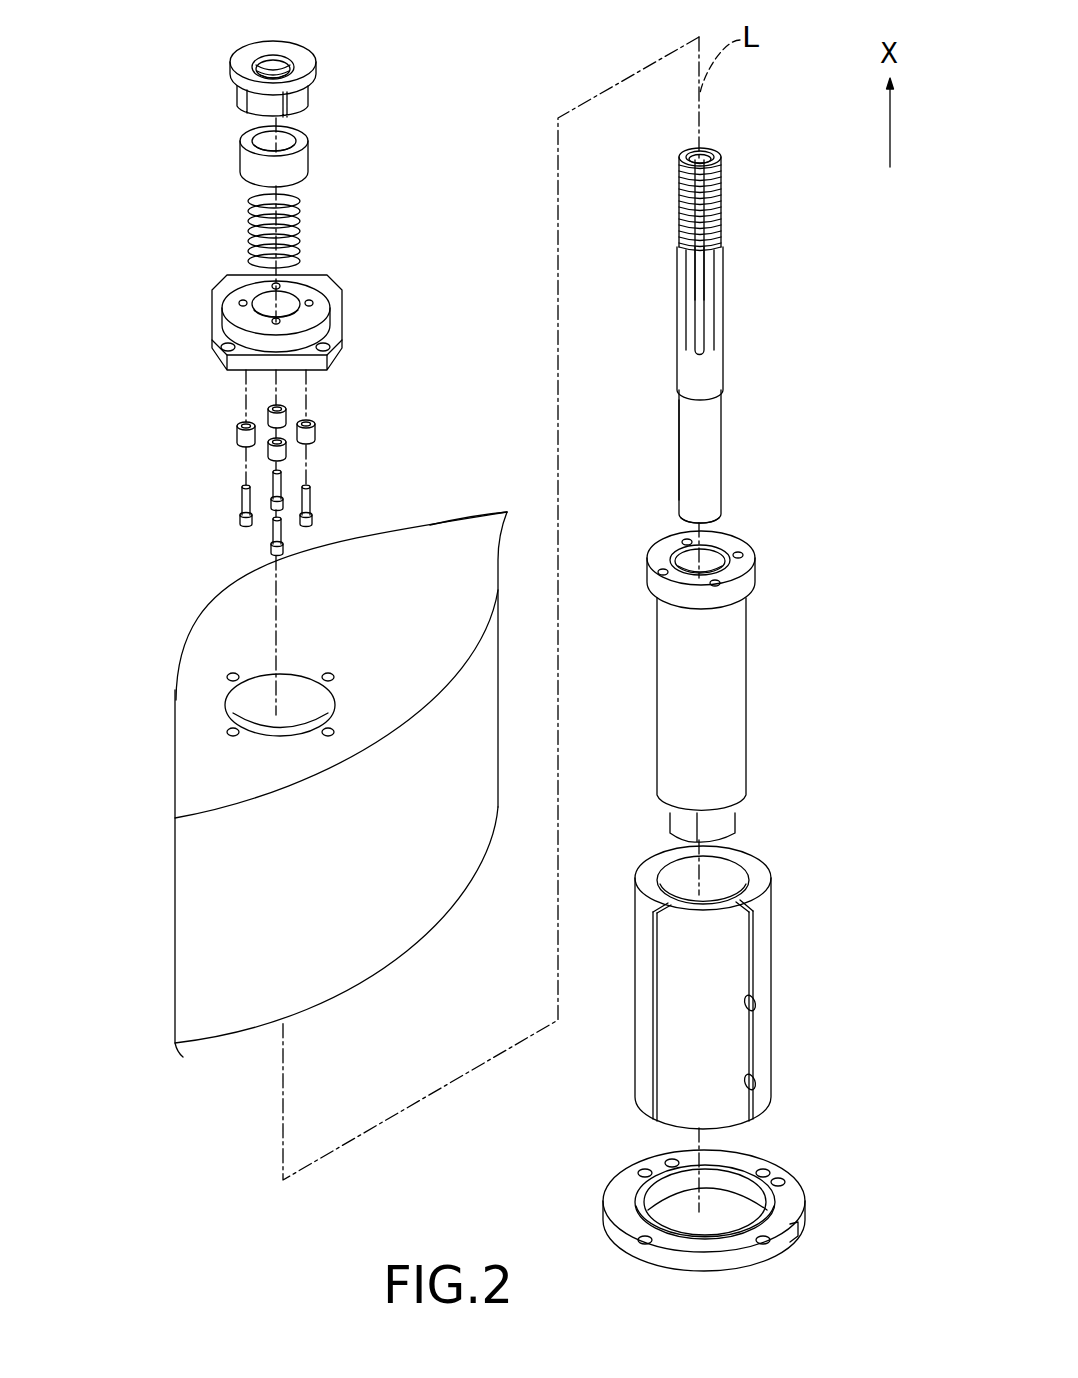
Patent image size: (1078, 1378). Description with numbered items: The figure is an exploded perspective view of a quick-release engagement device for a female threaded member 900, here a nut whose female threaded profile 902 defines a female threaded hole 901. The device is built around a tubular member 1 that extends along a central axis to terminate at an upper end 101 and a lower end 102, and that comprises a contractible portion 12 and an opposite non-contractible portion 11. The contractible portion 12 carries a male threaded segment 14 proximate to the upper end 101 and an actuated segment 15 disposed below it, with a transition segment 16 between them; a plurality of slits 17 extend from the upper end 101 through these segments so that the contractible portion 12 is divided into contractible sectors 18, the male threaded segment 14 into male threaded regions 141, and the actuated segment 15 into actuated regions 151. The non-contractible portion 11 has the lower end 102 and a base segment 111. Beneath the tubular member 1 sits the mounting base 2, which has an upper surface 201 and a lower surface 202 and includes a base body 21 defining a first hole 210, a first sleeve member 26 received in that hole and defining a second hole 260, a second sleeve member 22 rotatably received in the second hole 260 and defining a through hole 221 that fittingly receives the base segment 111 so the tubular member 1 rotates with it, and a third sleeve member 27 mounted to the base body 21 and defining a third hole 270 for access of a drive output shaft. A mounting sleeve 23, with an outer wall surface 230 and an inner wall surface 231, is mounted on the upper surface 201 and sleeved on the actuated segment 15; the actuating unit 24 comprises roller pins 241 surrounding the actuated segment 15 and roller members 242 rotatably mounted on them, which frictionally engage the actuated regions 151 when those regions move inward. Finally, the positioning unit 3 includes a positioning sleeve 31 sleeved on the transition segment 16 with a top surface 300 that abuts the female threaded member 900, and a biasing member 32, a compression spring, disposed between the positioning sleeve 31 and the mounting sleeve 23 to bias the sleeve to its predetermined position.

The tubular member 1 is at (707, 295).
The upper end 101 is at (715, 153).
The lower end 102 is at (683, 524).
The non-contractible portion 11 is at (711, 457).
The base segment 111 is at (689, 429).
The contractible portion 12 is at (706, 166).
The male threaded segment 14 is at (698, 166).
The male threaded regions 141 is at (683, 190).
The actuated segment 15 is at (697, 280).
The actuated regions 151 is at (686, 292).
The transition segment 16 is at (683, 242).
The slits 17 is at (702, 310).
The contractible sectors 18 is at (693, 273).
The mounting base 2 is at (305, 794).
The upper surface 201 is at (457, 542).
The lower surface 202 is at (229, 1032).
The base body 21 is at (203, 897).
The first hole 210 is at (260, 687).
The second sleeve member 22 is at (738, 672).
The through hole 221 is at (710, 563).
The mounting sleeve 23 is at (270, 306).
The outer wall surface 230 is at (270, 297).
The inner wall surface 231 is at (293, 303).
The actuating unit 24 is at (303, 471).
The roller pins 241 is at (308, 508).
The roller members 242 is at (310, 432).
The first sleeve member 26 is at (748, 967).
The second hole 260 is at (715, 877).
The third sleeve member 27 is at (741, 1196).
The third hole 270 is at (737, 1188).
The positioning unit 3 is at (290, 190).
The top surface 300 is at (252, 138).
The positioning sleeve 31 is at (270, 149).
The biasing member 32 is at (298, 213).
The female threaded member 900 is at (295, 65).
The female threaded hole 901 is at (290, 62).
The female threaded profile 902 is at (260, 63).